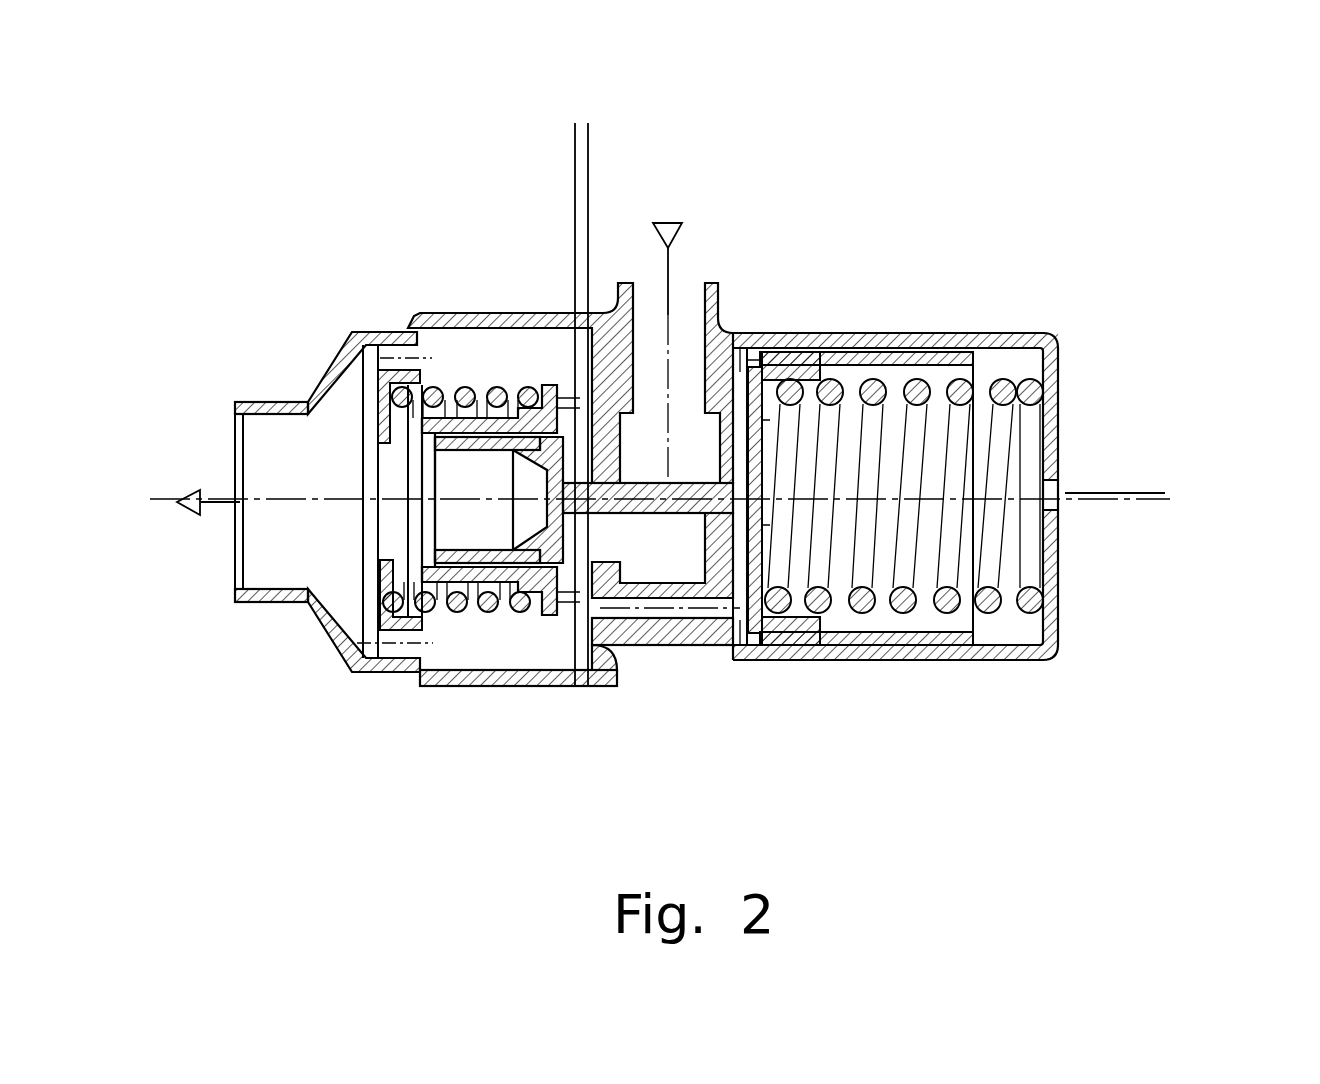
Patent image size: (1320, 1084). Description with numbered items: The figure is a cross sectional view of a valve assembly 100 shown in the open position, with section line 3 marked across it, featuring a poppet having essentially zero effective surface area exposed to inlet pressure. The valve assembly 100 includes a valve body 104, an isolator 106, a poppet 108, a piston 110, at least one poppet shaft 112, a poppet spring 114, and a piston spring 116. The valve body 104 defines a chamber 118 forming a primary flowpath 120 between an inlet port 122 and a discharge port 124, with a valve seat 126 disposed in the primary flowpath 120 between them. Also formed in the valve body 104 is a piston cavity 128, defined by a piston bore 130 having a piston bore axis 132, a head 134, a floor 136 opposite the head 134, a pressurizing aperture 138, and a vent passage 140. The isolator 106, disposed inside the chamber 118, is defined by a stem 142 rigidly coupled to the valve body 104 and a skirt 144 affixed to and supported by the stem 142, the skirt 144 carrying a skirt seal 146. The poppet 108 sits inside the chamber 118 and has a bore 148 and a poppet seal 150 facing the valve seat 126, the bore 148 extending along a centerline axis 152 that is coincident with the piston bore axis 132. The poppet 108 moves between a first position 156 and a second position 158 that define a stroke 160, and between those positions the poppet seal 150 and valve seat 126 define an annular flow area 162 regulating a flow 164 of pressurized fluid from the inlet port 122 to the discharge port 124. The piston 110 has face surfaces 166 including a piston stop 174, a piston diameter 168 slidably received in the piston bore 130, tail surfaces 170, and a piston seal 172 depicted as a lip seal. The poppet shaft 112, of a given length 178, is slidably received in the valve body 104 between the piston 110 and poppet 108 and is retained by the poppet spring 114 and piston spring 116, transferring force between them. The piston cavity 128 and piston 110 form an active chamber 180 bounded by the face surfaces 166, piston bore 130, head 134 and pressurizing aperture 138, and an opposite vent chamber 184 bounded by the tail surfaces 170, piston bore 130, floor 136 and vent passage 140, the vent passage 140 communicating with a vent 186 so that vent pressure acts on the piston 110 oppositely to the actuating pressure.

The valve assembly 100 is at (298, 806).
The valve body 104 is at (1105, 213).
The isolator 106 is at (663, 625).
The poppet 108 is at (462, 585).
The piston 110 is at (990, 343).
The poppet shaft 112 is at (567, 408).
The poppet spring 114 is at (388, 400).
The piston spring 116 is at (1060, 555).
The chamber 118 is at (702, 335).
The primary flowpath 120 is at (640, 335).
The inlet port 122 is at (688, 335).
The discharge port 124 is at (235, 552).
The valve seat 126 is at (568, 397).
The piston cavity 128 is at (1040, 345).
The piston bore 130 is at (1060, 628).
The piston bore axis 132 is at (1160, 493).
The head 134 is at (780, 556).
The floor 136 is at (1060, 420).
The pressurizing aperture 138 is at (630, 648).
The vent passage 140 is at (1060, 465).
The stem 142 is at (697, 640).
The skirt 144 is at (365, 600).
The skirt seal 146 is at (545, 640).
The bore 148 is at (395, 613).
The poppet seal 150 is at (583, 660).
The centerline axis 152 is at (305, 447).
The first position 156 is at (640, 148).
The second position 158 is at (590, 160).
The stroke 160 is at (578, 132).
The annular flow area 162 is at (625, 440).
The flow 164 is at (667, 222).
The face surfaces 166 is at (768, 432).
The piston diameter 168 is at (1060, 347).
The tail surfaces 170 is at (766, 580).
The piston seal 172 is at (765, 650).
The piston stop 174 is at (765, 480).
The length 178 is at (590, 260).
The active chamber 180 is at (725, 660).
The vent chamber 184 is at (930, 590).
The vent 186 is at (1060, 500).
The section line 3- 3 is at (582, 248).